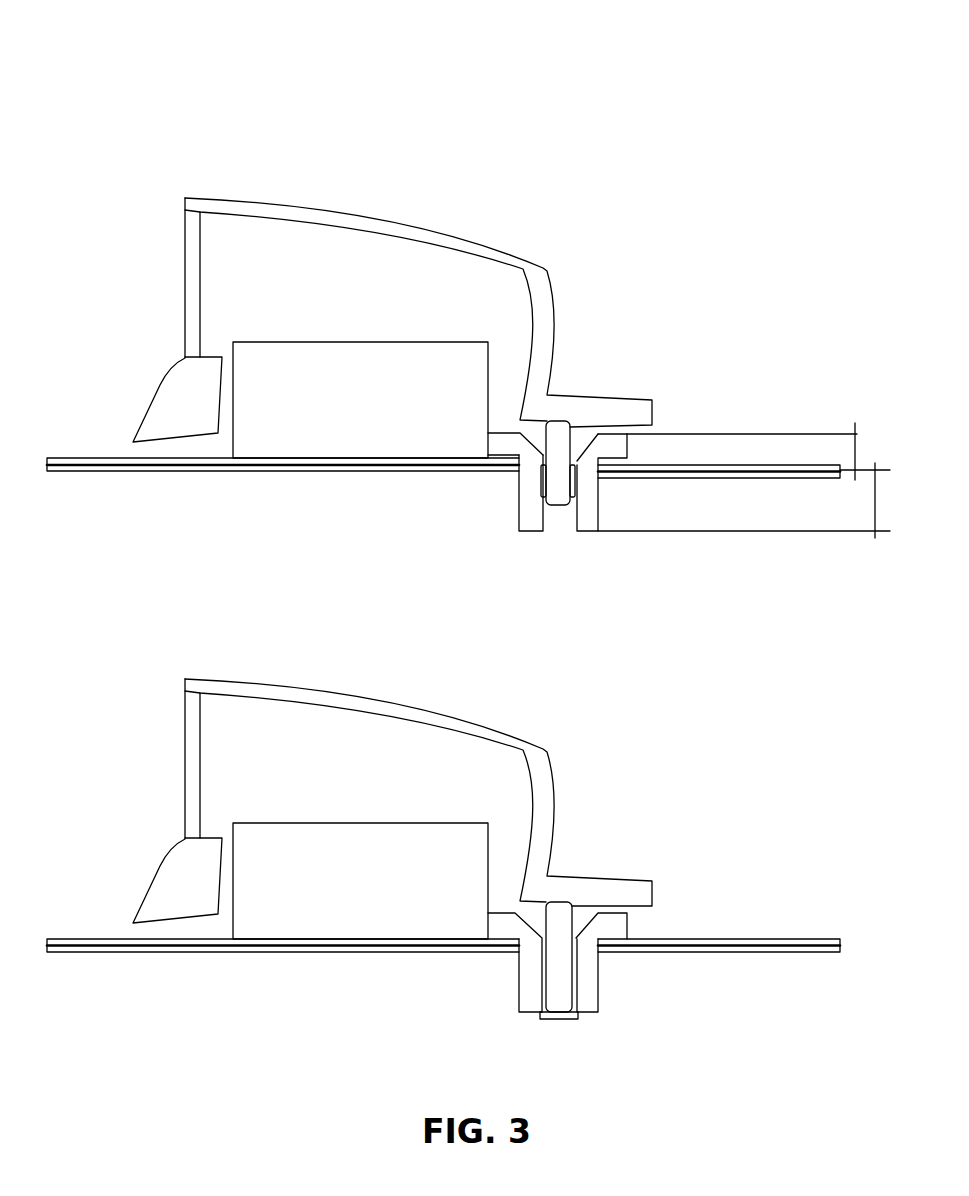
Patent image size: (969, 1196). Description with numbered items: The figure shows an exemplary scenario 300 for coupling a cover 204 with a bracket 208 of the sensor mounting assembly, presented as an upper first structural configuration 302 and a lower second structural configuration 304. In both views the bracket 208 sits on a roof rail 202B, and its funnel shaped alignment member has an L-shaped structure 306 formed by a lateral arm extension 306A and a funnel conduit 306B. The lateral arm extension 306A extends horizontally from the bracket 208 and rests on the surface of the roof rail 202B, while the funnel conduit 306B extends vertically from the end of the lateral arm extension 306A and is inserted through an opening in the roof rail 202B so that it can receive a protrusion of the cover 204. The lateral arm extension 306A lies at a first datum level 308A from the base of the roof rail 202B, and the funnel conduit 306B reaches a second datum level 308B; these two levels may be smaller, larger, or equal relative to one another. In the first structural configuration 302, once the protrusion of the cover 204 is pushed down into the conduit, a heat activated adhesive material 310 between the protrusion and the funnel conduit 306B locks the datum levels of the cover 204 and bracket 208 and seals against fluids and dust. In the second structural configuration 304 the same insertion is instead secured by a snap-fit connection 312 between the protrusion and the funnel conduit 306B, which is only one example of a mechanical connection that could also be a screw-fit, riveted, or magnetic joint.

The exemplary scenario 300 is at (130, 483).
The first structural configuration 302 is at (156, 238).
The second structural configuration 304 is at (156, 688).
The cover 204 is at (494, 225).
The bracket 208 is at (473, 360).
The roof rail 202B is at (90, 476).
The L-shaped structure 306 is at (552, 442).
The lateral arm extension 306A is at (511, 440).
The funnel conduit 306B is at (589, 527).
The first datum level 308A is at (839, 448).
The second datum level 308B is at (863, 512).
The heat activated adhesive material 310 is at (539, 498).
The snap-fit connection 312 is at (567, 1031).